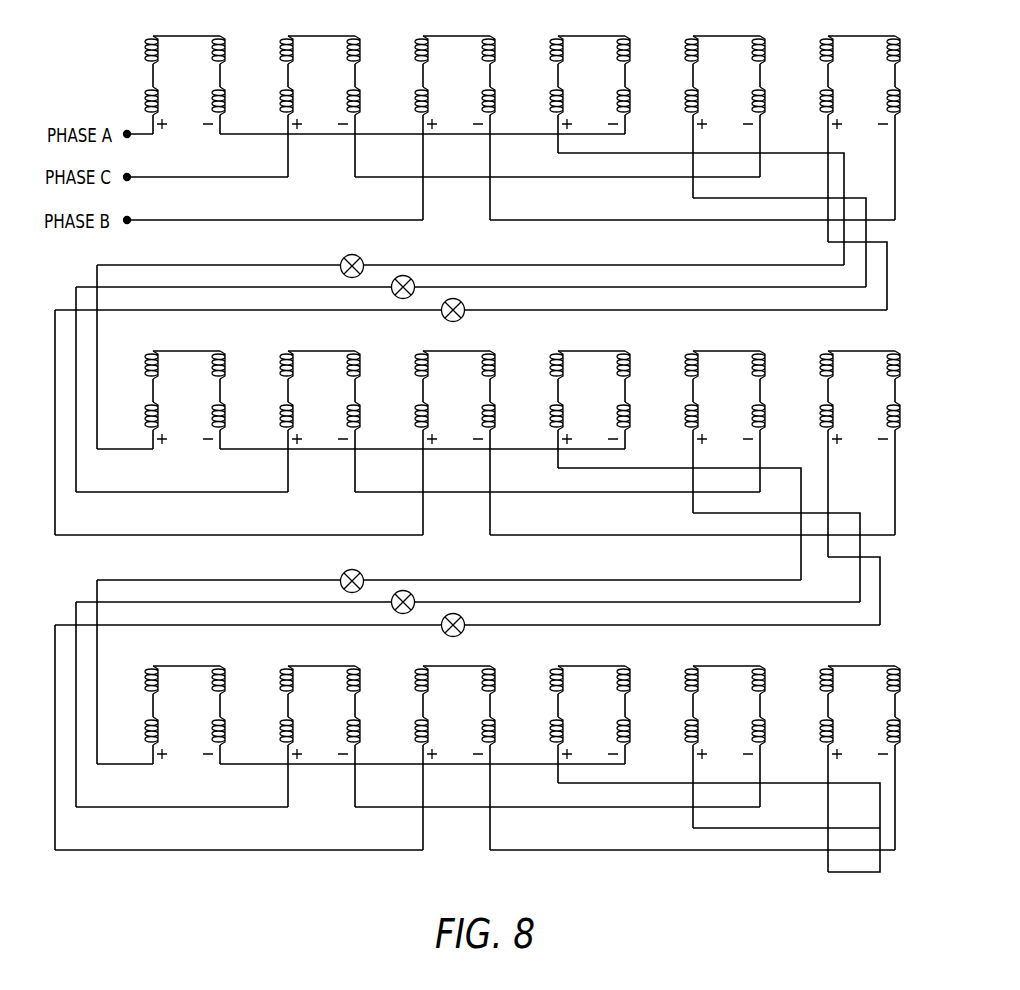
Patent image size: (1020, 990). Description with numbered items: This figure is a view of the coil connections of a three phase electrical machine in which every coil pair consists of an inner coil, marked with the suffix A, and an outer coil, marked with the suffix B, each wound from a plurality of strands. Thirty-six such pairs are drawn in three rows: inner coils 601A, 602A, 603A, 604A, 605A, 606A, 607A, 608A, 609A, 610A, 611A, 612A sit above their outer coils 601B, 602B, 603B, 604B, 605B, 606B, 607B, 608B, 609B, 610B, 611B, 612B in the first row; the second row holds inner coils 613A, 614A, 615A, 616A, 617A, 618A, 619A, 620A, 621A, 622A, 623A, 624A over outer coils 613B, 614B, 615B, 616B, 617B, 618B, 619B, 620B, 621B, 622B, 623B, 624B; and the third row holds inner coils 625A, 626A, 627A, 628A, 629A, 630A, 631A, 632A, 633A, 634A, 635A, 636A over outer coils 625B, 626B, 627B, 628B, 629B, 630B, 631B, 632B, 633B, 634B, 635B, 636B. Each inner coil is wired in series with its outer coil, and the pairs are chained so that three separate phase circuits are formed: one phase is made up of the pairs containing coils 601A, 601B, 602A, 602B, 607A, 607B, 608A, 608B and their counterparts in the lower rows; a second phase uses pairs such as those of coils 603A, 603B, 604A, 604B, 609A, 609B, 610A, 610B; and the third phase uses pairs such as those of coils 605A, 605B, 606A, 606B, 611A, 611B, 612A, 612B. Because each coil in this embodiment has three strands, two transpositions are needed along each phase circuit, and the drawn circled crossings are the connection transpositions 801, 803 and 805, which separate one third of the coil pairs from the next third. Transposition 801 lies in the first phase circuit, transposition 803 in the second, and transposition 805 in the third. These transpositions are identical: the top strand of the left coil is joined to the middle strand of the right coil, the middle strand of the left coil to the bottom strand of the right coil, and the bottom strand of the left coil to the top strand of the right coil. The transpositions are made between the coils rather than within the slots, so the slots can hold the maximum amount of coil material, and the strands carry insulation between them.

The inner coil 601A is at (127, 50).
The outer coil 601B is at (127, 101).
The inner coil 602A is at (194, 50).
The outer coil 602B is at (194, 101).
The inner coil 603A is at (262, 50).
The outer coil 603B is at (262, 101).
The inner coil 604A is at (329, 50).
The outer coil 604B is at (329, 101).
The inner coil 605A is at (397, 50).
The outer coil 605B is at (397, 101).
The inner coil 606A is at (464, 50).
The outer coil 606B is at (464, 101).
The inner coil 607A is at (532, 50).
The outer coil 607B is at (532, 101).
The inner coil 608A is at (599, 50).
The outer coil 608B is at (599, 101).
The inner coil 609A is at (667, 50).
The outer coil 609B is at (667, 101).
The inner coil 610A is at (734, 50).
The outer coil 610B is at (734, 101).
The inner coil 611A is at (802, 50).
The outer coil 611B is at (802, 101).
The inner coil 612A is at (869, 50).
The outer coil 612B is at (869, 101).
The inner coil 613A is at (127, 365).
The outer coil 613B is at (127, 416).
The inner coil 614A is at (194, 365).
The outer coil 614B is at (194, 416).
The inner coil 615A is at (262, 365).
The outer coil 615B is at (262, 416).
The inner coil 616A is at (329, 365).
The outer coil 616B is at (329, 416).
The inner coil 617A is at (397, 365).
The outer coil 617B is at (397, 416).
The inner coil 618A is at (464, 365).
The outer coil 618B is at (464, 416).
The inner coil 619A is at (532, 365).
The outer coil 619B is at (532, 416).
The inner coil 620A is at (599, 365).
The outer coil 620B is at (599, 416).
The inner coil 621A is at (667, 365).
The outer coil 621B is at (667, 416).
The inner coil 622A is at (734, 365).
The outer coil 622B is at (734, 416).
The inner coil 623A is at (802, 365).
The outer coil 623B is at (802, 416).
The inner coil 624A is at (869, 365).
The outer coil 624B is at (869, 416).
The inner coil 625A is at (127, 680).
The outer coil 625B is at (127, 731).
The inner coil 626A is at (194, 680).
The outer coil 626B is at (194, 731).
The inner coil 627A is at (262, 680).
The outer coil 627B is at (262, 731).
The inner coil 628A is at (329, 680).
The outer coil 628B is at (329, 731).
The inner coil 629A is at (397, 680).
The outer coil 629B is at (397, 731).
The inner coil 630A is at (464, 680).
The outer coil 630B is at (464, 731).
The inner coil 631A is at (532, 680).
The outer coil 631B is at (532, 731).
The inner coil 632A is at (599, 680).
The outer coil 632B is at (599, 731).
The inner coil 633A is at (667, 680).
The outer coil 633B is at (667, 731).
The inner coil 634A is at (734, 680).
The outer coil 634B is at (734, 731).
The inner coil 635A is at (802, 680).
The outer coil 635B is at (802, 731).
The inner coil 636A is at (869, 680).
The outer coil 636B is at (869, 731).
The connection transposition 801 is at (343, 258).
The connection transposition 803 is at (411, 279).
The connection transposition 805 is at (463, 317).